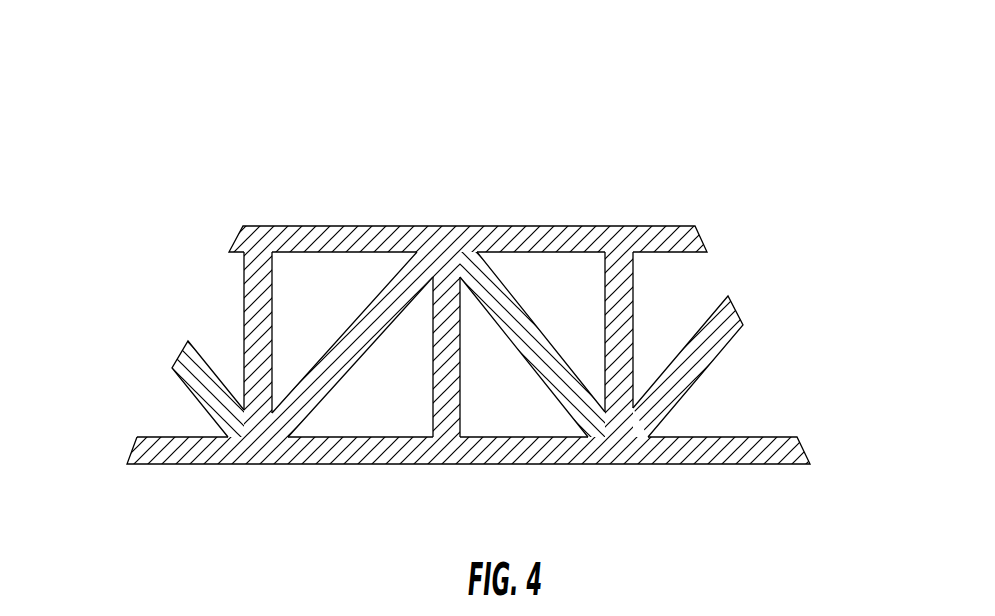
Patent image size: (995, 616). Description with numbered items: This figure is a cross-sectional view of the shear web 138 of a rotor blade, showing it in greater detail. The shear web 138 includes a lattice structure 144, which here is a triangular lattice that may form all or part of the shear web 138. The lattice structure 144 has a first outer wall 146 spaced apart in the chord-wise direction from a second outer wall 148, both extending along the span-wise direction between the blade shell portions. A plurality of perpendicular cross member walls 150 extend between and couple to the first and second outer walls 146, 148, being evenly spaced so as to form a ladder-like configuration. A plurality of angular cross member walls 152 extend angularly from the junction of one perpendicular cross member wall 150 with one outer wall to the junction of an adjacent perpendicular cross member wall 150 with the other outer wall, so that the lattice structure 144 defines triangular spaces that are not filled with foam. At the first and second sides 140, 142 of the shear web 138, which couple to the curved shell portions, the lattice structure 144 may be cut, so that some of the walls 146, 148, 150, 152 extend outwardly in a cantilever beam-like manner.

The shear web 138 is at (186, 88).
The first side 140 is at (765, 240).
The second side 142 is at (106, 320).
The lattice structure 144 is at (505, 140).
The first outer wall 146 is at (347, 226).
The second outer wall 148 is at (198, 467).
The perpendicular cross member walls 150 is at (243, 310).
The angular cross member walls 152 is at (353, 323).